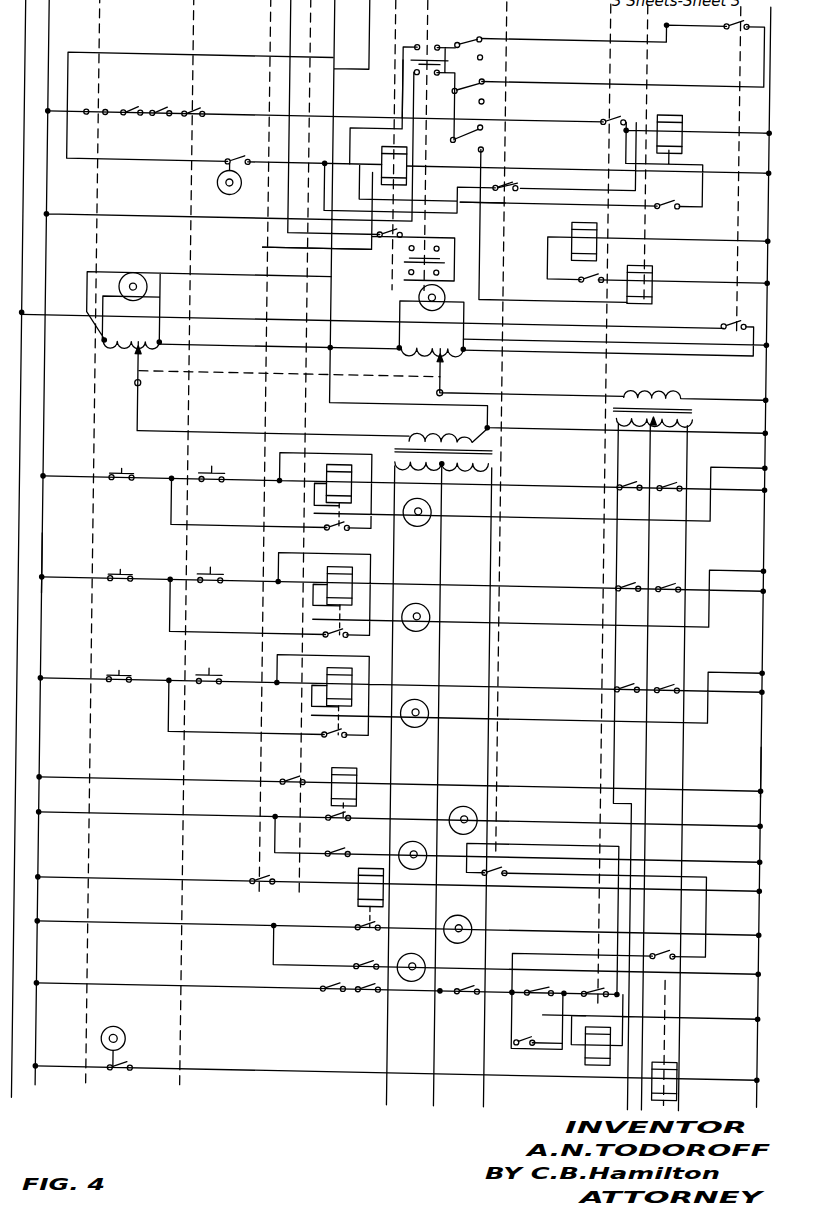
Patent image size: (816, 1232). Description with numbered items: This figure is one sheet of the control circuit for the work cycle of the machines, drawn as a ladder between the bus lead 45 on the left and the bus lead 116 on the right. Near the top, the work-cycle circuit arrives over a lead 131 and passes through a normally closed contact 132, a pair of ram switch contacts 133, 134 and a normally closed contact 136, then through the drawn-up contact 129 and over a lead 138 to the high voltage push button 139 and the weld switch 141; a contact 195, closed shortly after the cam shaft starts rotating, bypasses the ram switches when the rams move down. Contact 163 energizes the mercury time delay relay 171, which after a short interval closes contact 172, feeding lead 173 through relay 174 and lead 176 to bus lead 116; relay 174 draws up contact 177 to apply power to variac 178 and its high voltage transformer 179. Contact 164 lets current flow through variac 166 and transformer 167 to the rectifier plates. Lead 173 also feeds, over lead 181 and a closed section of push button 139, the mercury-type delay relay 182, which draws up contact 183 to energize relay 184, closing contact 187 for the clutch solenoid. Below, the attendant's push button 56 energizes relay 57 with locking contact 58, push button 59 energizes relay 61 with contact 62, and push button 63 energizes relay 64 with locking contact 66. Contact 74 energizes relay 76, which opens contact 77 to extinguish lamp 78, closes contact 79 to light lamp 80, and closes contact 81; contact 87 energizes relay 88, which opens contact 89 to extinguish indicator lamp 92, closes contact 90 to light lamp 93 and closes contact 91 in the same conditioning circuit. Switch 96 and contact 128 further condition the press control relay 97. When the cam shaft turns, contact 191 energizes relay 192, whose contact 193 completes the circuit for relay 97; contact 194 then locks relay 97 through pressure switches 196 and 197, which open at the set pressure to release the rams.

The lead 131 is at (165, 59).
The normally closed contact 132 is at (90, 116).
The ram switch contact 133 is at (126, 114).
The ram switch contact 134 is at (158, 114).
The normally closed contact 136 is at (186, 124).
The bypass contact 195 is at (232, 162).
The high voltage push button 139 is at (420, 45).
The weld switch 141 is at (500, 35).
The contact 163 is at (727, 27).
The lead 138 is at (394, 88).
The contact 187 is at (597, 114).
The mercury time delay relay 171 is at (663, 118).
The relay 174 is at (392, 164).
The lead 176 is at (518, 184).
The contact 129 is at (508, 182).
The lead 173 is at (490, 202).
The contact 172 is at (668, 203).
The lead 181 is at (258, 250).
The contact 177 is at (384, 240).
The mercury-type delay relay 182 is at (595, 238).
The contact 183 is at (585, 283).
The relay 184 is at (648, 280).
The contact 164 is at (722, 317).
The variac 178 is at (104, 350).
The variac 166 is at (466, 355).
The transformer 167 is at (682, 392).
The high voltage transformer 179 is at (490, 446).
The push button 56 is at (222, 464).
The relay 57 is at (325, 487).
The locking contact 58 is at (348, 532).
The bus lead 45 is at (42, 568).
The push button 59 is at (215, 573).
The relay 61 is at (342, 585).
The contact 62 is at (348, 639).
The push button 63 is at (210, 688).
The relay 64 is at (343, 686).
The locking contact 66 is at (328, 739).
The contact 74 is at (286, 787).
The relay 76 is at (350, 786).
The contact 77 is at (332, 816).
The lamp 78 is at (480, 815).
The contact 79 is at (332, 852).
The lamp 80 is at (416, 841).
The contact 87 is at (258, 888).
The relay 88 is at (362, 886).
The contact 89 is at (364, 925).
The contact 90 is at (362, 964).
The contact 81 is at (330, 994).
The contact 91 is at (366, 994).
The switch 96 is at (465, 994).
The indicator lamp 92 is at (476, 924).
The lamp 93 is at (430, 962).
The contact 128 is at (506, 875).
The contact 193 is at (668, 955).
The contact 194 is at (575, 986).
The pressure switch 196 is at (531, 1024).
The pressure switch 197 is at (550, 1039).
The press control relay 97 is at (592, 1045).
The relay 192 is at (684, 1068).
The contact 191 is at (130, 1040).
The bus lead 116 is at (763, 762).